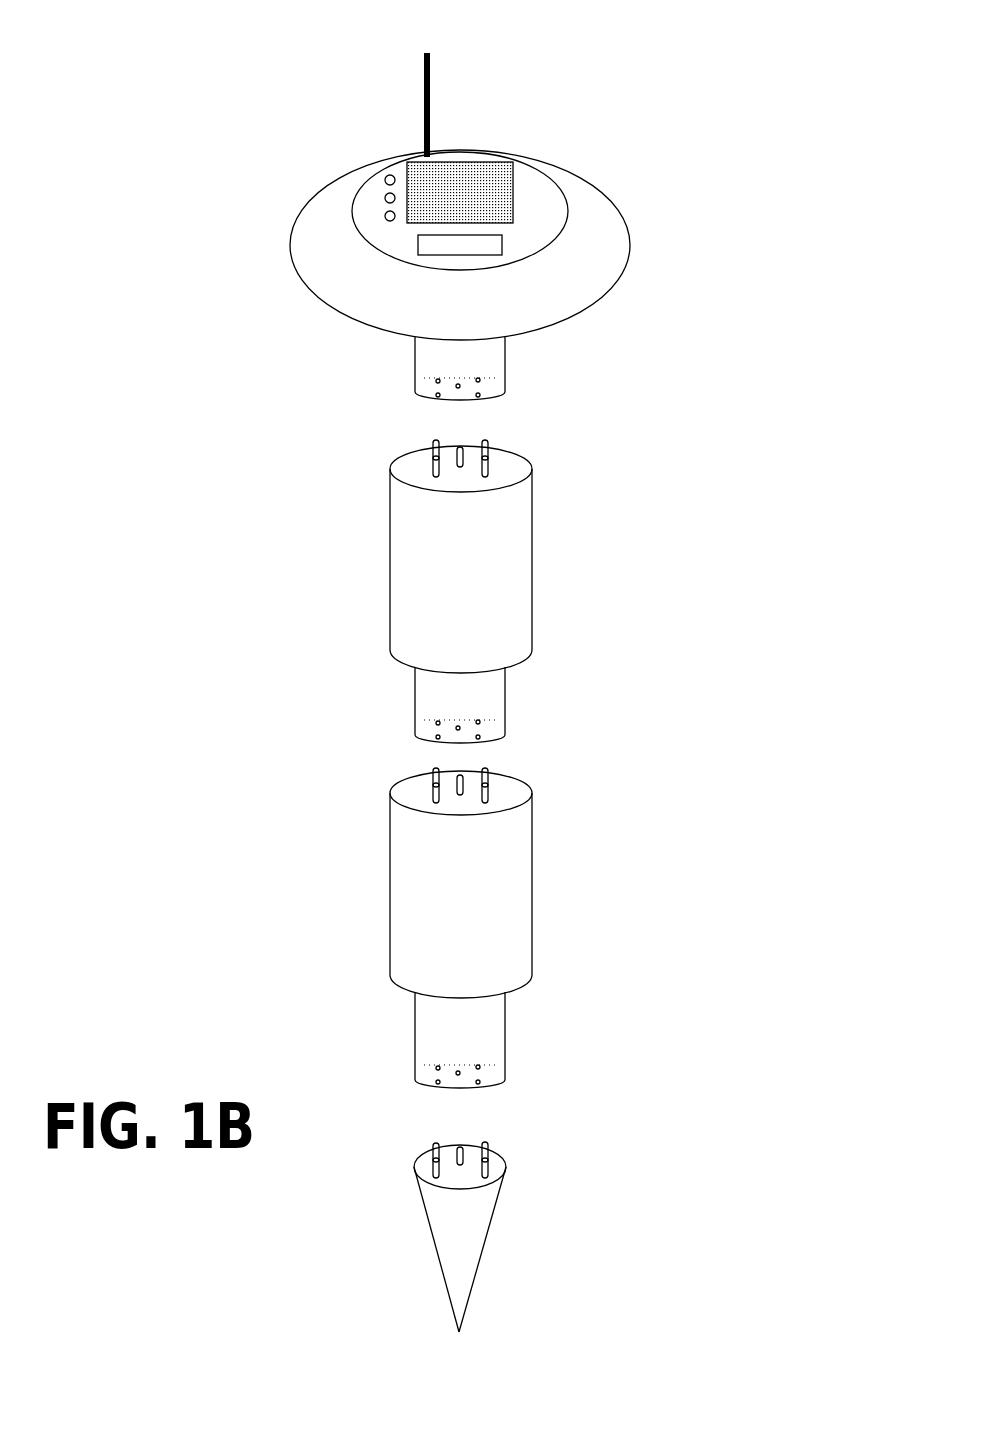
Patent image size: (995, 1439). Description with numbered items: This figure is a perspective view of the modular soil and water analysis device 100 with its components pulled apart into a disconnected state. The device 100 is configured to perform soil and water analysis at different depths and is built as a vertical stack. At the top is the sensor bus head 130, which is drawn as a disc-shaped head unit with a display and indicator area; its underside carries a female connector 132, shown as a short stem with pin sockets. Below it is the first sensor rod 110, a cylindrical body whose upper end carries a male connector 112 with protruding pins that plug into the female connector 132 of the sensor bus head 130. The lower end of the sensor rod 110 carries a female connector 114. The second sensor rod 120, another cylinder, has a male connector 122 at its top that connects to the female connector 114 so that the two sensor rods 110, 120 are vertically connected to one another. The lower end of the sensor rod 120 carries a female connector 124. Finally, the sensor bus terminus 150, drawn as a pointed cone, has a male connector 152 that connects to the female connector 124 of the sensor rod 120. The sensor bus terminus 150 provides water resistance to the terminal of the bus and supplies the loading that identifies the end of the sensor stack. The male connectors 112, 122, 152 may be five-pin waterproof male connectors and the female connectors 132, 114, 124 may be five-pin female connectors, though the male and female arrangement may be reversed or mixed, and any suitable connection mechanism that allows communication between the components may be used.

The modular soil and water analysis device 100 is at (130, 96).
The sensor bus head 130 is at (603, 190).
The female connector 132 is at (478, 380).
The male connector 112 is at (483, 440).
The sensor rod 110 is at (532, 558).
The female connector 114 is at (478, 722).
The male connector 122 is at (488, 767).
The sensor rod 120 is at (532, 898).
The female connector 124 is at (482, 1068).
The male connector 152 is at (490, 1142).
The sensor bus terminus 150 is at (478, 1238).